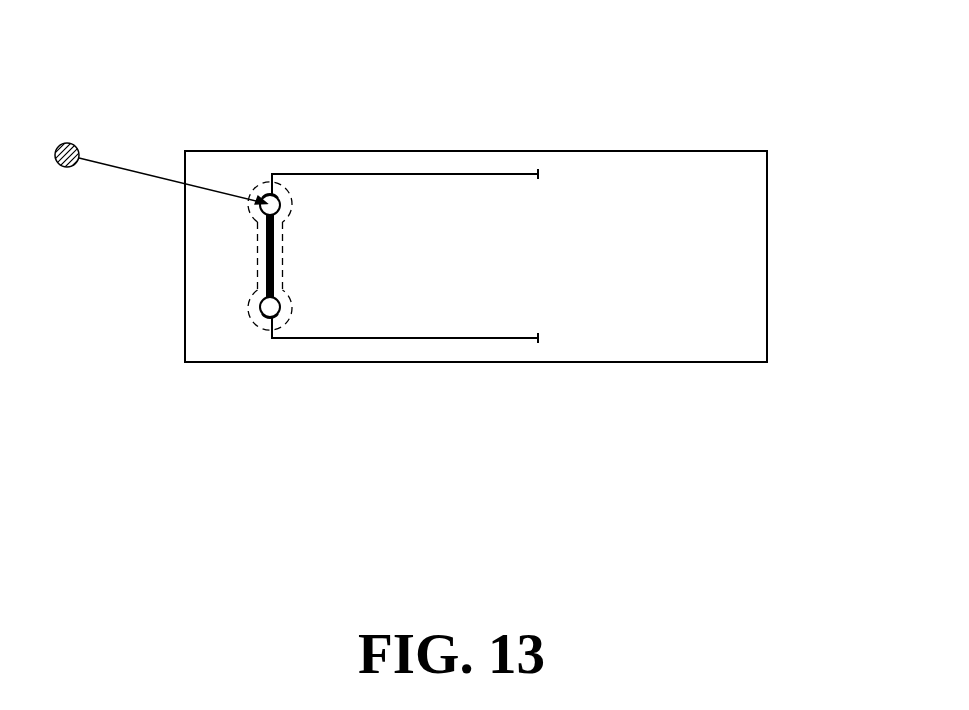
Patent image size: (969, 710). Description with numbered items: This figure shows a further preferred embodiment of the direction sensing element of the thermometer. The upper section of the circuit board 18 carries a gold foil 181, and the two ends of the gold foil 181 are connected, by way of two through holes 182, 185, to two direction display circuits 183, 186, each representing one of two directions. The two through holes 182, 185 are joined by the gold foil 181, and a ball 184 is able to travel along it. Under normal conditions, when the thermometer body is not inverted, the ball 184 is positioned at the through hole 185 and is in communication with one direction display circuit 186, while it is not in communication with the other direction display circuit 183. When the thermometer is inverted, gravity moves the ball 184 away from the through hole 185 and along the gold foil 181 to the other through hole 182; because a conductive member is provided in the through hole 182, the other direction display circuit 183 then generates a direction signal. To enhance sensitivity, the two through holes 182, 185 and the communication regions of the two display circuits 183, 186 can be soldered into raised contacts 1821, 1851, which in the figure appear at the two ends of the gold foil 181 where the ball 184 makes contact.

The circuit board 18 is at (747, 269).
The gold foil 181 is at (283, 255).
The through hole 182 is at (265, 322).
The raised contact 1821 is at (268, 316).
The direction display circuit 183 is at (450, 338).
The ball 184 is at (56, 170).
The through hole 185 is at (268, 197).
The raised contact 1851 is at (272, 194).
The direction display circuit 186 is at (448, 176).